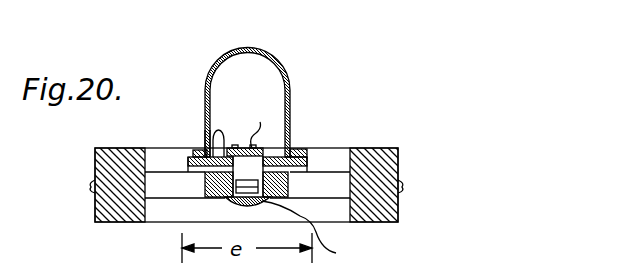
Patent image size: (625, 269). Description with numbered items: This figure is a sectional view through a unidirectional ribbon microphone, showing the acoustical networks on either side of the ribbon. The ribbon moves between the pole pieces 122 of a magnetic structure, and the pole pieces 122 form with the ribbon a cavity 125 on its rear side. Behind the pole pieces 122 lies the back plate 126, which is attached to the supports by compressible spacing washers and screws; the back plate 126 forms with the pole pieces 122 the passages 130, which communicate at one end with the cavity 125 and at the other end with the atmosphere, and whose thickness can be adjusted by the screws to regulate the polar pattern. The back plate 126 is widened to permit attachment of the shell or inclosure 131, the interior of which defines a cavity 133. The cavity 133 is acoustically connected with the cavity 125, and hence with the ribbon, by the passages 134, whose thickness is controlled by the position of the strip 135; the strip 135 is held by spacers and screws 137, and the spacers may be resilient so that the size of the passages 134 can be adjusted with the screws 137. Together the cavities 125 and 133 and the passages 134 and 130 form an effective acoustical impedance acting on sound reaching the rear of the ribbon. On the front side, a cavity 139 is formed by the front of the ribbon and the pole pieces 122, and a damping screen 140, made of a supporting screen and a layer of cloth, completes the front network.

The cavity 125 is at (350, 150).
The passages 130 is at (312, 166).
The pole pieces 122 is at (209, 184).
The passages 134 is at (207, 124).
The strip 135 is at (268, 150).
The shell or inclosure 131 is at (263, 58).
The cavity 133 is at (268, 76).
The back plate 126 is at (206, 136).
The screws 137 is at (266, 116).
The cavity 139 is at (237, 207).
The damping screen 140 is at (318, 232).